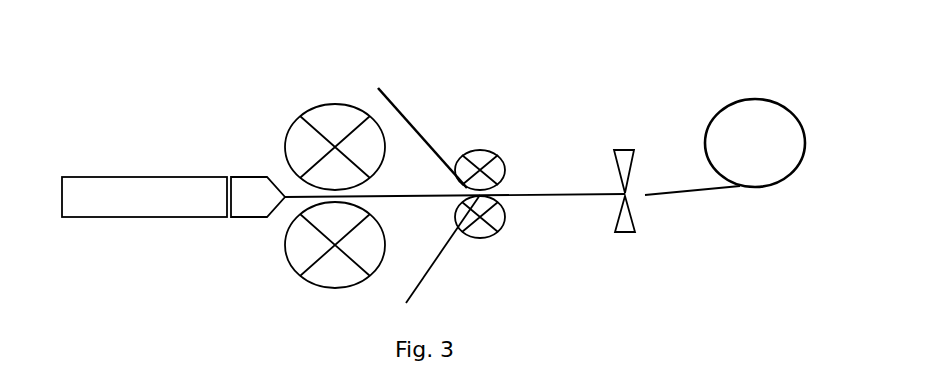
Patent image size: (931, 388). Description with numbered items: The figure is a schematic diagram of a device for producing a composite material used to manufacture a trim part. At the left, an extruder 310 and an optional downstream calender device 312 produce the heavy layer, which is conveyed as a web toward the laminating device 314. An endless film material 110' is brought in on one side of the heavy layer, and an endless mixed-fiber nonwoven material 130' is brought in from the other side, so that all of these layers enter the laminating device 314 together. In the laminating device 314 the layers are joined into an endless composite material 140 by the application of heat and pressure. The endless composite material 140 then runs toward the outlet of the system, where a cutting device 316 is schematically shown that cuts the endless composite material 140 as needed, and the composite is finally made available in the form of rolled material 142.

The extruder 310 is at (133, 191).
The calender device 312 is at (333, 113).
The endless mixed-fiber nonwoven material 130' is at (418, 105).
The laminating device 314 is at (477, 160).
The endless composite material 140 is at (543, 195).
The cutting device 316 is at (622, 150).
The rolled material 142 is at (748, 128).
The release liner 110' is at (462, 252).